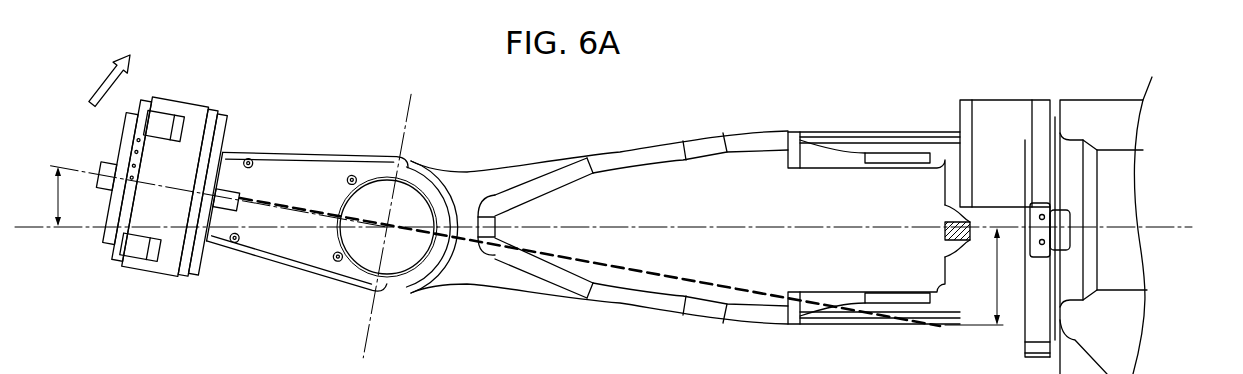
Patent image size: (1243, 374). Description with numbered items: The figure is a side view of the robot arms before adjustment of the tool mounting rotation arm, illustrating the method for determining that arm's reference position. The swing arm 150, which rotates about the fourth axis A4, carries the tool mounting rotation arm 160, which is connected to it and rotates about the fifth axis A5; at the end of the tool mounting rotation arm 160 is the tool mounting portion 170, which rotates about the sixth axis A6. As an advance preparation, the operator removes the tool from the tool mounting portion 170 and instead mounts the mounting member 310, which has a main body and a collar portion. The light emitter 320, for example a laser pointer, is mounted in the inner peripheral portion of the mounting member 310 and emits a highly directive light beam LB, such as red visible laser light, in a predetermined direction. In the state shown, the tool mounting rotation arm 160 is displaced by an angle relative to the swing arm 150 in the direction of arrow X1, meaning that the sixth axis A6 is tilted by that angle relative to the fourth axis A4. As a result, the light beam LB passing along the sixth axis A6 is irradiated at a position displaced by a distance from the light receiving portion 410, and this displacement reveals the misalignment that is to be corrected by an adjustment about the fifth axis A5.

The swing arm 150 is at (882, 123).
The tool mounting rotation arm 160 is at (302, 152).
The tool mounting portion 170 is at (197, 97).
The mounting member 310 is at (103, 234).
The light emitter 320 is at (237, 207).
The light receiving portion 410 is at (945, 231).
The fourth axis A4 is at (1170, 230).
The fifth axis A5 is at (387, 227).
The sixth axis A6 is at (78, 168).
The direction of arrow X1 is at (105, 79).
The light beam LB is at (683, 277).